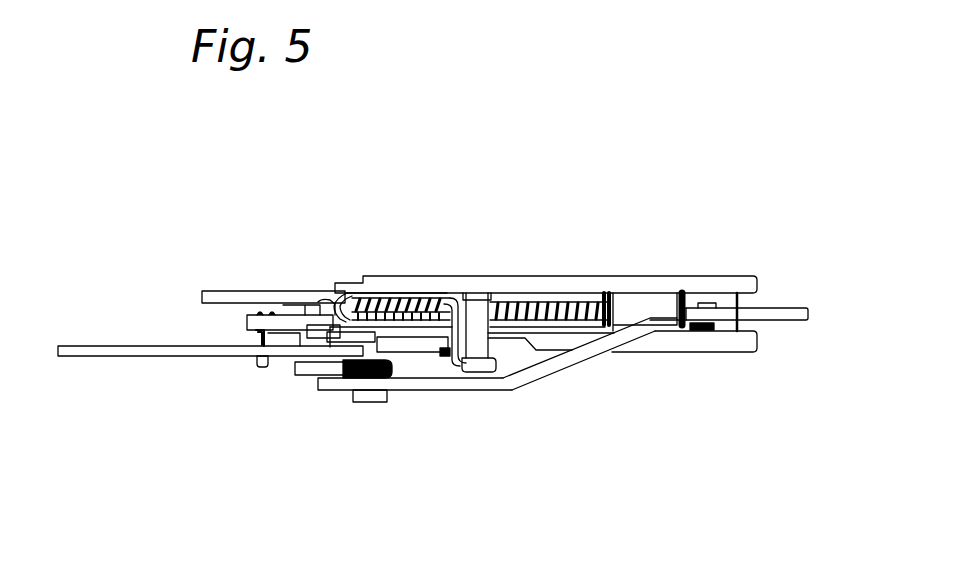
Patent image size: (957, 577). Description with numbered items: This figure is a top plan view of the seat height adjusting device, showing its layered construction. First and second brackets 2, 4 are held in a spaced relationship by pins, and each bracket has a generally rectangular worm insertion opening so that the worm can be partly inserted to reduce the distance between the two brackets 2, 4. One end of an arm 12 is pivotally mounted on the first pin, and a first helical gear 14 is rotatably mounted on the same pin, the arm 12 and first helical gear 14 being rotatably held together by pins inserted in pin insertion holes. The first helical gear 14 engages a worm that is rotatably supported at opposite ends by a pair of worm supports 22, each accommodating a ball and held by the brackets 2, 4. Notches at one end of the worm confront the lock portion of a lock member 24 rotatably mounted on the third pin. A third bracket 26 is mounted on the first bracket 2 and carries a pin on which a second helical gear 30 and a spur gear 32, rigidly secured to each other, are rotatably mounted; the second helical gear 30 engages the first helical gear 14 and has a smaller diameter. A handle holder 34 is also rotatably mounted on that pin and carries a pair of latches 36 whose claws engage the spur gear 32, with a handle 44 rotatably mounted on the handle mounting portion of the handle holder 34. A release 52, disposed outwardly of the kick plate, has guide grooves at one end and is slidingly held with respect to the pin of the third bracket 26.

The first bracket 2 is at (629, 287).
The second bracket 4 is at (674, 342).
The arm 12 is at (248, 291).
The first helical gear 14 is at (556, 297).
The worm support 22 is at (653, 307).
The lock member 24 is at (790, 321).
The third bracket 26 is at (478, 293).
The second helical gear 30 is at (413, 299).
The spur gear 32 is at (372, 297).
The handle holder 34 is at (419, 337).
The latch 36 is at (247, 320).
The handle 44 is at (160, 357).
The release 52 is at (512, 391).